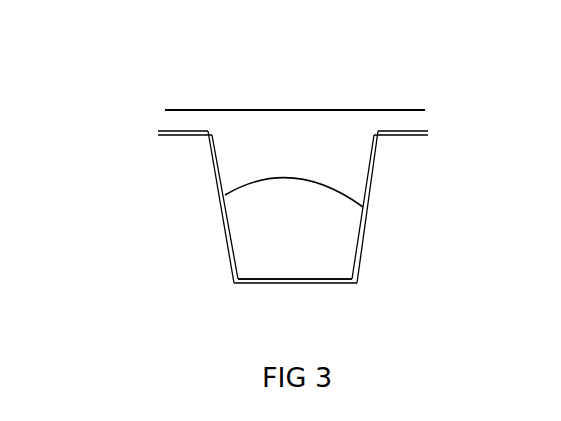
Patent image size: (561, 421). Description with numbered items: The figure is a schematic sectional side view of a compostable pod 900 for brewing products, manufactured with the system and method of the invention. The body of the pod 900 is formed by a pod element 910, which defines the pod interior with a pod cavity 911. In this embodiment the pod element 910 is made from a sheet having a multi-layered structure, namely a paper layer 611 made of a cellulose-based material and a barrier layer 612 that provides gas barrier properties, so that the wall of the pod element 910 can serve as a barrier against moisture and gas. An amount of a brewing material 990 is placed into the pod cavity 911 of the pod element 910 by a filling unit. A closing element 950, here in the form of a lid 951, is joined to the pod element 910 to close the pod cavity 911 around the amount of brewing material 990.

The compostable pod 900 is at (131, 94).
The closing element 950 is at (248, 103).
The lid 951 is at (392, 110).
The pod element 910 is at (190, 180).
The paper layer 611 is at (215, 145).
The barrier layer 612 is at (372, 185).
The pod cavity 911 is at (352, 160).
The brewing material 990 is at (320, 240).